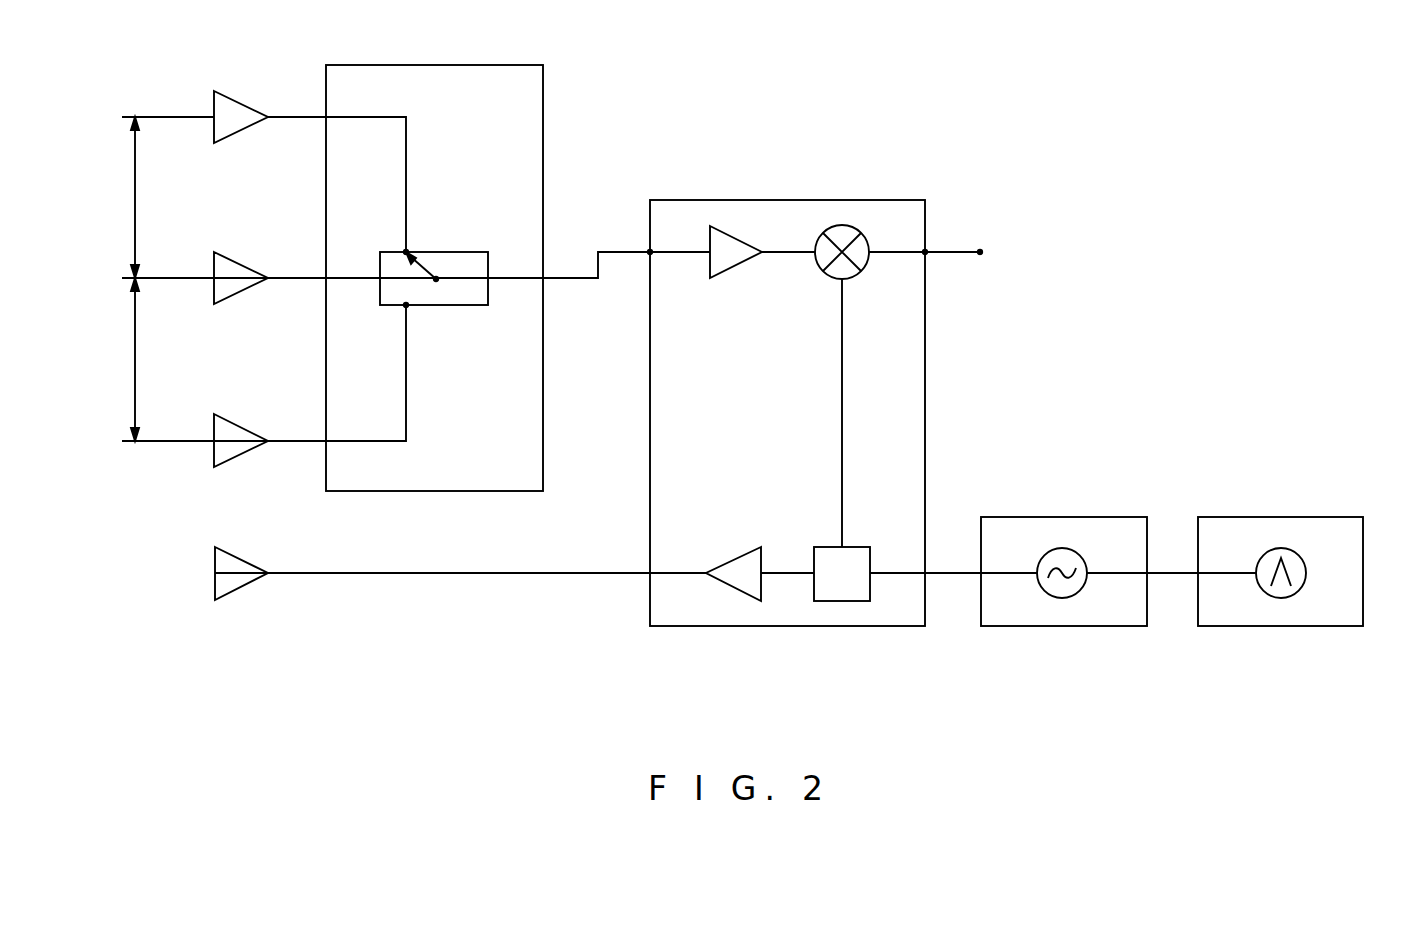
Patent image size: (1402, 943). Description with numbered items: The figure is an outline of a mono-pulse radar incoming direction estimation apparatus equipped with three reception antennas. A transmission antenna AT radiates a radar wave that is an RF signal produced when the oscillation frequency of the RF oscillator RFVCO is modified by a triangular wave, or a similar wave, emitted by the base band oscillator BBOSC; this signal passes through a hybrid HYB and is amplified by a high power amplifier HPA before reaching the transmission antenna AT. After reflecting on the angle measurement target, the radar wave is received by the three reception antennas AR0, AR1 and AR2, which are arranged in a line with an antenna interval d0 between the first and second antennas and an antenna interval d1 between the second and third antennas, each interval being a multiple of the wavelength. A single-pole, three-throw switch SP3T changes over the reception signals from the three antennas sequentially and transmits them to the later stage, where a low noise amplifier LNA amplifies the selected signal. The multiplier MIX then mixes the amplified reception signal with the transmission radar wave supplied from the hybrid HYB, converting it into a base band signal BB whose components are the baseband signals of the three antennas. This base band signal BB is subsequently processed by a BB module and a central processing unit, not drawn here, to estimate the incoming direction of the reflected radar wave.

The reception antenna AR2 is at (229, 98).
The reception antenna AR1 is at (229, 260).
The reception antenna AR0 is at (229, 421).
The antenna interval d1 is at (106, 197).
The antenna interval d0 is at (106, 359).
The switch SP3T is at (434, 278).
The low noise amplifier LNA is at (737, 262).
The multiplier MIX is at (898, 386).
The hybrid HYB is at (899, 574).
The high power amplifier HPA is at (488, 583).
The transmission antenna AT is at (250, 568).
The RF oscillator RFVCO is at (1108, 554).
The base band oscillator BBOSC is at (1273, 554).
The base band signal BB is at (1117, 285).